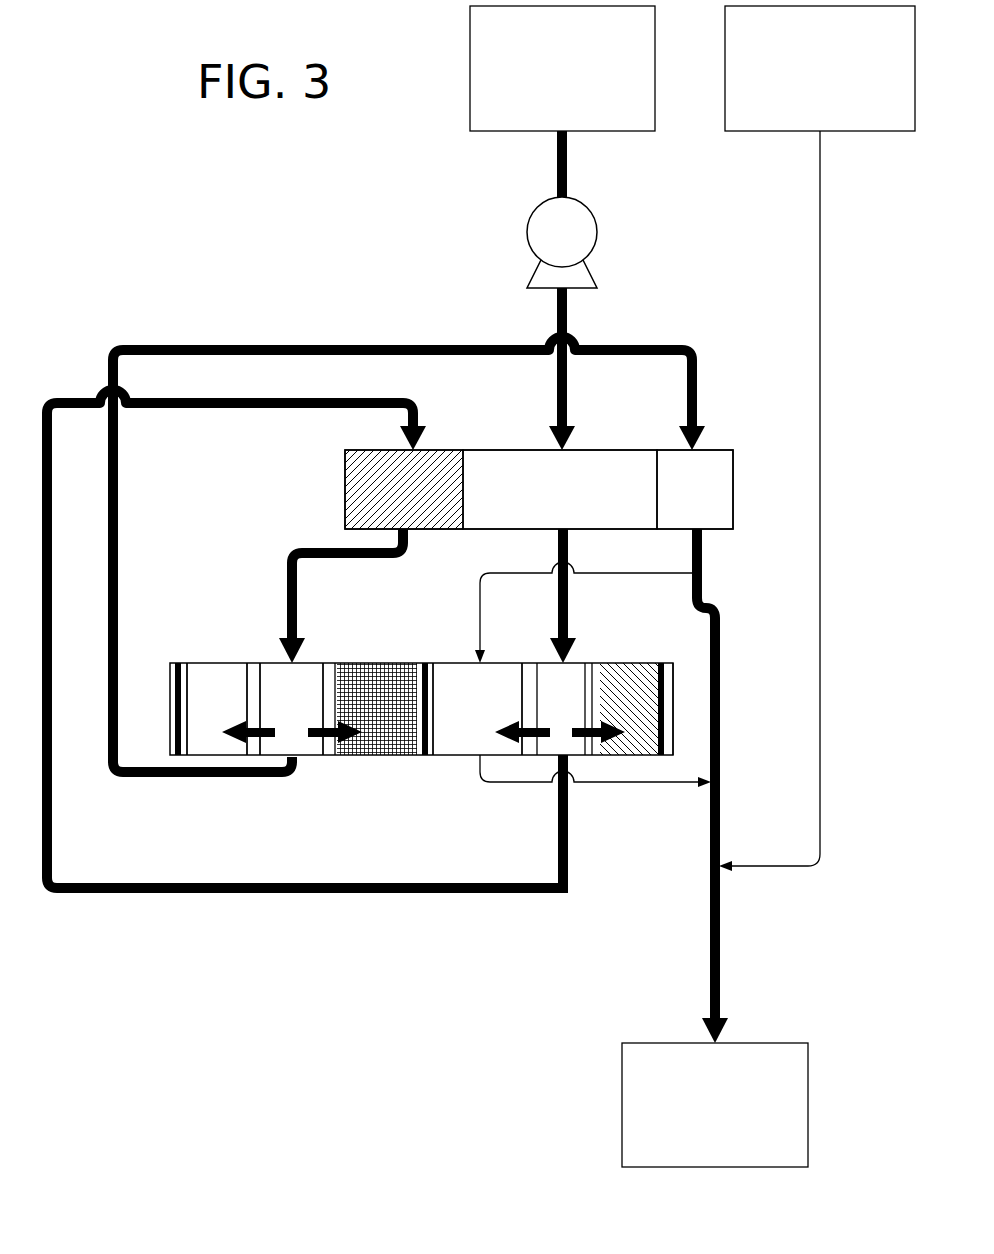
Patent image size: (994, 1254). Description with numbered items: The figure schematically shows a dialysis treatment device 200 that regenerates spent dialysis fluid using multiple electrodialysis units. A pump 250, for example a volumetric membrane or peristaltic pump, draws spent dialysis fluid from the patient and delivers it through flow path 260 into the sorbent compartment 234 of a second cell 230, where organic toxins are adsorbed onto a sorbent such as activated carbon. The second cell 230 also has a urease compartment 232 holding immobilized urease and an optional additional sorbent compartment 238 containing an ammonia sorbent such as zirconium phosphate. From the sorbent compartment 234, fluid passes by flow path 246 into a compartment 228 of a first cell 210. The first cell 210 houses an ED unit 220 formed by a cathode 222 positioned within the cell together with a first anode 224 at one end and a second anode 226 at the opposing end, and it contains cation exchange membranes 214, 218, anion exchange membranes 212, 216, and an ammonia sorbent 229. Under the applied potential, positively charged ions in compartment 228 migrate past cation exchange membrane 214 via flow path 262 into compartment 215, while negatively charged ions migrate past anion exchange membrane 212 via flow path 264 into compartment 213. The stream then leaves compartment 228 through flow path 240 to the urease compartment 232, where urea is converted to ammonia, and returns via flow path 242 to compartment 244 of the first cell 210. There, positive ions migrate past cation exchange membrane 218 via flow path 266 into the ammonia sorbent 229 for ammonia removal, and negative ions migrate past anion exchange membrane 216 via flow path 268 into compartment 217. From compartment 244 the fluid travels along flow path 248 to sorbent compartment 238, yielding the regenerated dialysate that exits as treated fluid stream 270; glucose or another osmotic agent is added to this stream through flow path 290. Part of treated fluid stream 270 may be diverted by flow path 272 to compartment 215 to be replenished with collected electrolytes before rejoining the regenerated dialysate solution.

The dialysis treatment device 200 is at (188, 260).
The first cell 210 is at (208, 652).
The anion exchange membrane 212 is at (592, 748).
The compartment 213 is at (640, 676).
The cation exchange membrane 214 is at (528, 745).
The compartment 215 is at (460, 682).
The anion exchange membrane 216 is at (253, 752).
The compartment 217 is at (233, 678).
The cation exchange membrane 218 is at (330, 748).
The ED unit 220 is at (167, 677).
The cathode 222 is at (420, 757).
The first anode 224 is at (172, 727).
The second anode 226 is at (667, 714).
The compartment 228 is at (565, 740).
The ammonia sorbent 229 is at (380, 740).
The second cell 230 is at (523, 457).
The urease compartment 232 is at (440, 473).
The sorbent compartment 234 is at (613, 463).
The sorbent compartment 238 is at (718, 465).
The flow path 240 is at (50, 597).
The flow path 242 is at (330, 553).
The compartment 244 is at (305, 685).
The flow path 246 is at (566, 555).
The flow path 248 is at (118, 557).
The pump 250 is at (578, 226).
The flow path 260 is at (568, 163).
The flow path 262 is at (498, 727).
The flow path 264 is at (585, 745).
The flow path 266 is at (317, 748).
The flow path 268 is at (223, 732).
The treated fluid stream 270 is at (720, 935).
The flow path 272 is at (653, 578).
The flow path 290 is at (822, 445).